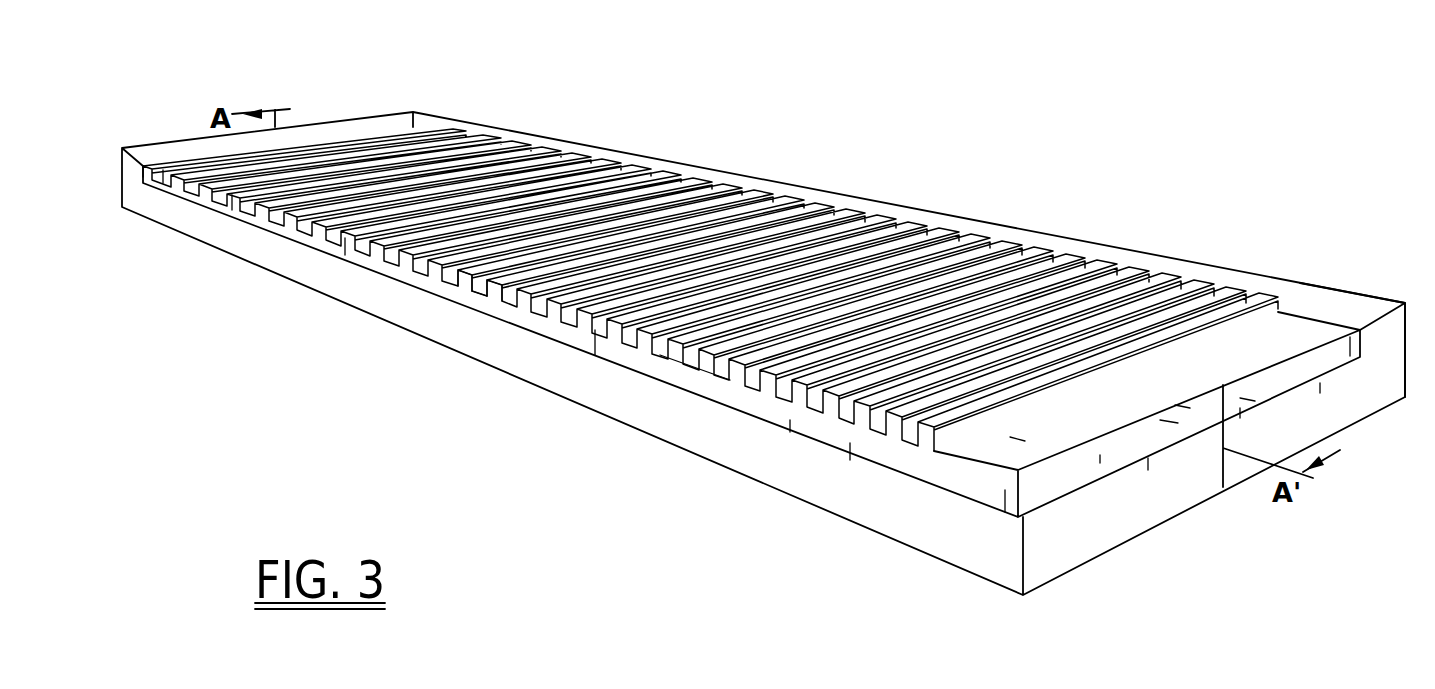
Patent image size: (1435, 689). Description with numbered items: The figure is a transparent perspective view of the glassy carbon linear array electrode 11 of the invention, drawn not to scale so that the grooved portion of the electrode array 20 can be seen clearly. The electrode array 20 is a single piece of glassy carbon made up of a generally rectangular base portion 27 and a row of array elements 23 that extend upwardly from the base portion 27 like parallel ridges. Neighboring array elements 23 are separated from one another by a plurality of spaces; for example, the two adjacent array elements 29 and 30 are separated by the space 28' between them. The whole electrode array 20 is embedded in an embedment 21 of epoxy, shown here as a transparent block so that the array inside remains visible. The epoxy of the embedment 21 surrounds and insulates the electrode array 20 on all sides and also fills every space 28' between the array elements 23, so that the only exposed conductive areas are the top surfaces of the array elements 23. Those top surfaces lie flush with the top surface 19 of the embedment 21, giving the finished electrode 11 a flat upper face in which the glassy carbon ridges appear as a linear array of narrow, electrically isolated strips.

The optical grating device 11 is at (1153, 88).
The top surface 19 is at (1328, 290).
The electrode array 20 is at (972, 488).
The embedment 21 is at (872, 506).
The array elements 23 is at (1265, 287).
The base portion 27 is at (693, 374).
The space 28' is at (460, 345).
The array element 29 is at (468, 284).
The array element 30 is at (497, 289).